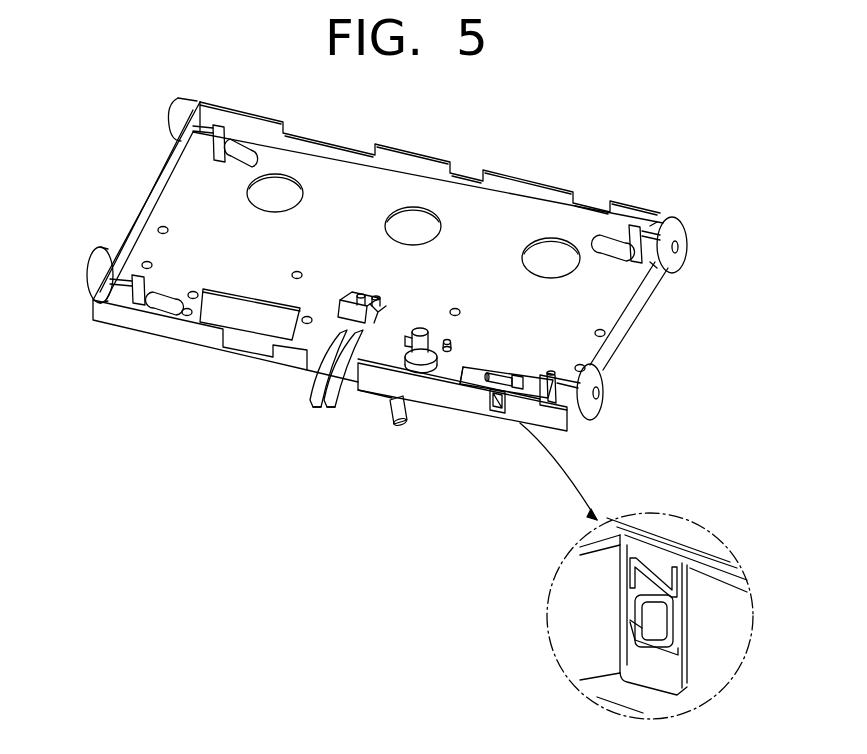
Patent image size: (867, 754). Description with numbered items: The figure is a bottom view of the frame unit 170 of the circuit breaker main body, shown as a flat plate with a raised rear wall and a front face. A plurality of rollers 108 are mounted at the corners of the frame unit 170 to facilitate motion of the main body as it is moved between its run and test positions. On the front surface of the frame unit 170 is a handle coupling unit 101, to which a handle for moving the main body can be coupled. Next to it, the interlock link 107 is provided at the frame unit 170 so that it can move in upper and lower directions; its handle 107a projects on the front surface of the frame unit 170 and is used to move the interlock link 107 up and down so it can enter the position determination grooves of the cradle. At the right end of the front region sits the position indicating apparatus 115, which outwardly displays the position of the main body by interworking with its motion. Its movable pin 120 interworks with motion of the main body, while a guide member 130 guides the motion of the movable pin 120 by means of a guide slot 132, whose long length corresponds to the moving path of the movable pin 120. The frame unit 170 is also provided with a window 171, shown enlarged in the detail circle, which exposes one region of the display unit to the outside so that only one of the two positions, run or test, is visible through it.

The handle coupling unit 101 is at (313, 383).
The interlock link 107 is at (422, 360).
The handle 107a is at (393, 413).
The rollers 108 is at (175, 133).
The position indicating apparatus 115 is at (753, 561).
The movable pin 120 is at (600, 364).
The guide member 130 is at (505, 361).
The guide slot 132 is at (497, 373).
The frame unit 170 is at (373, 380).
The window 171 is at (495, 397).